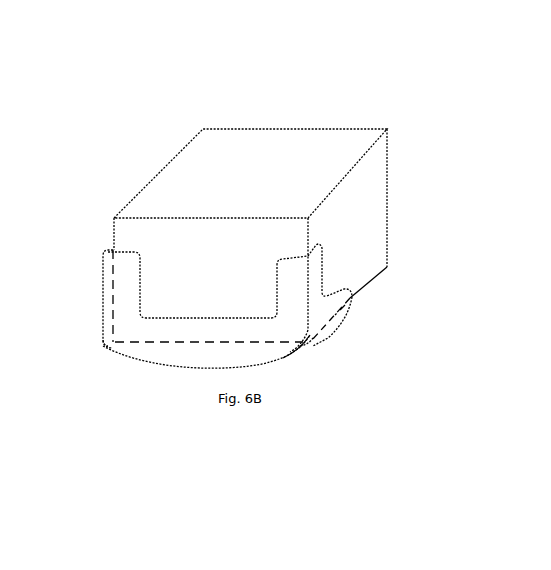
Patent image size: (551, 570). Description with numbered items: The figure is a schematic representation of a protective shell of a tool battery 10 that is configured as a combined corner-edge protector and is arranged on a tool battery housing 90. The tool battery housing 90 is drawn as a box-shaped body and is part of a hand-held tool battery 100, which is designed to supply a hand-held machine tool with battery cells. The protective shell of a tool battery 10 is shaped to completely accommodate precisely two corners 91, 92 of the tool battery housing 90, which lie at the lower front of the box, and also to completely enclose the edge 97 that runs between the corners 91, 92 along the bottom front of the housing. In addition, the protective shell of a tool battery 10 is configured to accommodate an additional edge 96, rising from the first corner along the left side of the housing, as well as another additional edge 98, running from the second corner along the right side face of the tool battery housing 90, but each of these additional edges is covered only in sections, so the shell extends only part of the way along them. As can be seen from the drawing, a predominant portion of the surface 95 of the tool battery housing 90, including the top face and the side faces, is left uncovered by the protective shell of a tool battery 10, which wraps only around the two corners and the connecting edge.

The hand-held tool battery 100 is at (160, 98).
The tool battery housing 90 is at (232, 160).
The surface 95 is at (184, 176).
The additional edge 96 is at (112, 287).
The edge 97 is at (160, 350).
The additional edge 98 is at (335, 319).
The corner 91 is at (113, 350).
The corner 92 is at (313, 343).
The protective shell of a tool battery 10 is at (100, 349).